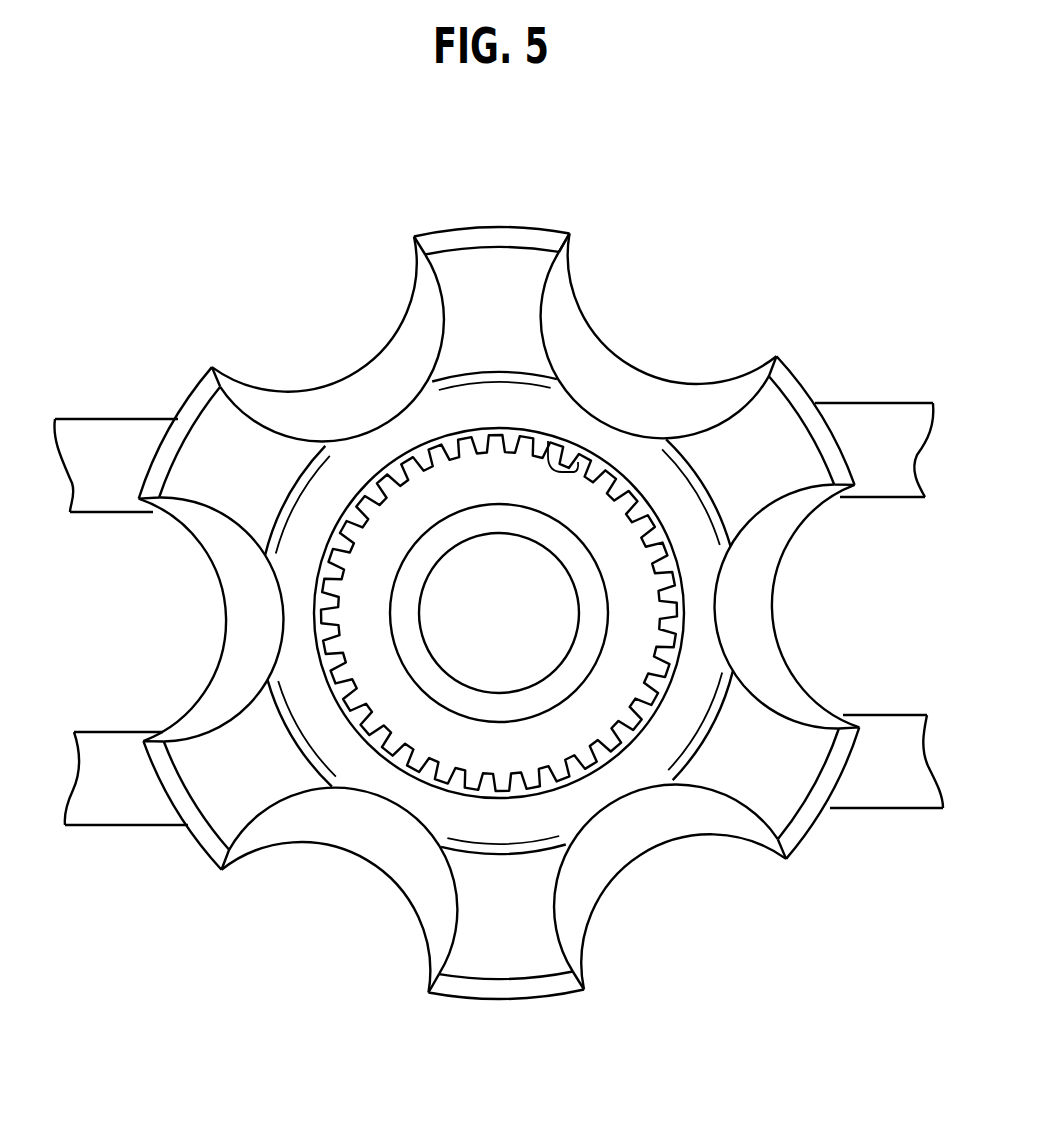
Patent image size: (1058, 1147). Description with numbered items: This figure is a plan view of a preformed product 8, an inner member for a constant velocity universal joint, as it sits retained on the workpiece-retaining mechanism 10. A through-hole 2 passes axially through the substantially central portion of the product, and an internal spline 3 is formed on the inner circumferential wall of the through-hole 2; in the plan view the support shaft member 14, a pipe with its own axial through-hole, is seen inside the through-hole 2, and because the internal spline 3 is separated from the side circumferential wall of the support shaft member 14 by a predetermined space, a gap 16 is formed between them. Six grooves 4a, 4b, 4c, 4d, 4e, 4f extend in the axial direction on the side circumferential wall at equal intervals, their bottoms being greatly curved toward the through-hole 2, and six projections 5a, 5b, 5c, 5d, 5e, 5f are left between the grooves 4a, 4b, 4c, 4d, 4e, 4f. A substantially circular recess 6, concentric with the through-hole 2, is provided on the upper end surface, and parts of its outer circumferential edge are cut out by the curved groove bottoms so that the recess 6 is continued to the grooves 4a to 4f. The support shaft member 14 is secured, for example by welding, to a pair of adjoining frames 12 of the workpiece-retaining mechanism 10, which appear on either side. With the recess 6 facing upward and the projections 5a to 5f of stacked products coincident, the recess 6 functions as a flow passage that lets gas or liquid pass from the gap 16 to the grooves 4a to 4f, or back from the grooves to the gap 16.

The through-hole 2 is at (400, 470).
The internal spline 3 is at (598, 468).
The groove 4a is at (757, 597).
The groove 4b is at (708, 396).
The groove 4c is at (386, 372).
The groove 4d is at (243, 628).
The groove 4e is at (426, 900).
The groove 4f is at (643, 830).
The projection 5a is at (790, 375).
The projection 5b is at (447, 238).
The projection 5c is at (192, 402).
The projection 5d is at (195, 850).
The projection 5e is at (553, 990).
The projection 5f is at (800, 835).
The recess 6 is at (683, 738).
The preformed product 8 is at (572, 268).
The workpiece-retaining mechanism 10 is at (716, 156).
The frame 12 is at (890, 488).
The support shaft member 14 is at (440, 690).
The gap 16 is at (553, 762).